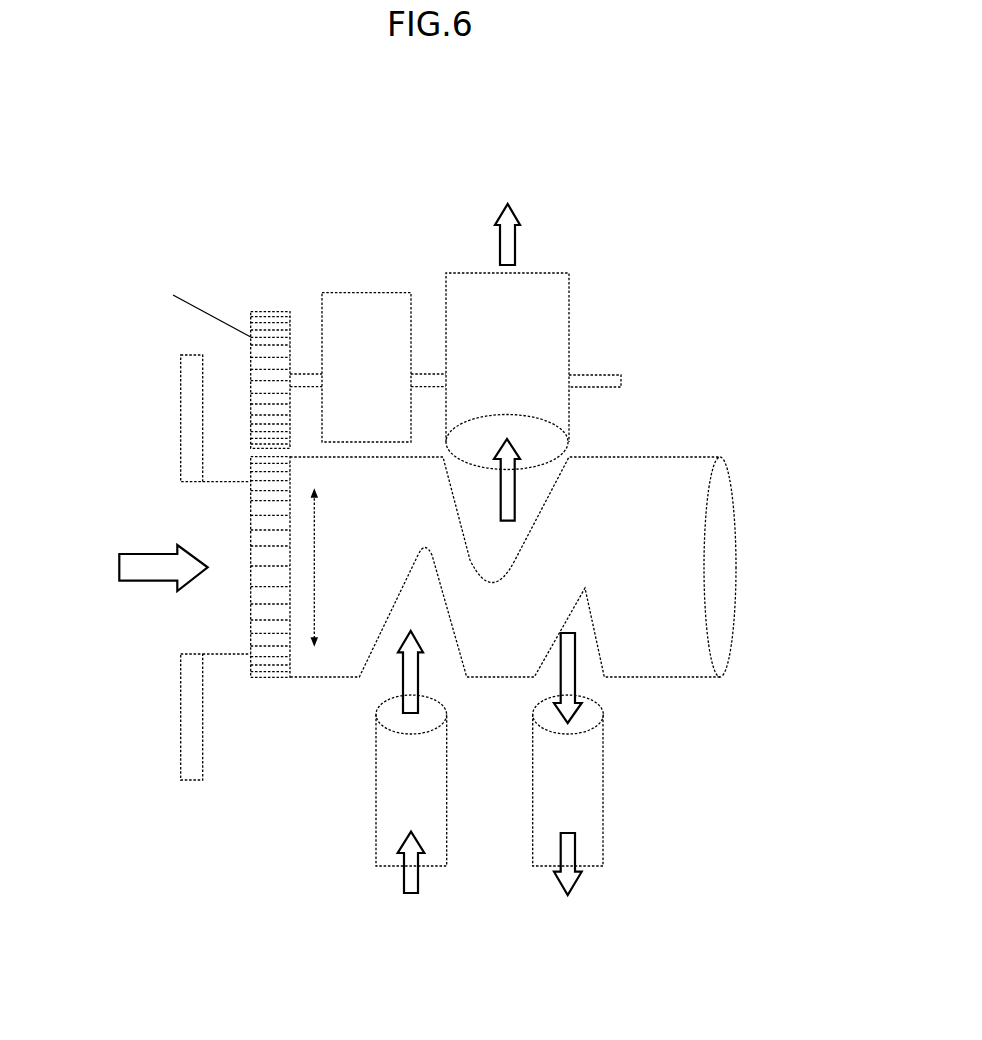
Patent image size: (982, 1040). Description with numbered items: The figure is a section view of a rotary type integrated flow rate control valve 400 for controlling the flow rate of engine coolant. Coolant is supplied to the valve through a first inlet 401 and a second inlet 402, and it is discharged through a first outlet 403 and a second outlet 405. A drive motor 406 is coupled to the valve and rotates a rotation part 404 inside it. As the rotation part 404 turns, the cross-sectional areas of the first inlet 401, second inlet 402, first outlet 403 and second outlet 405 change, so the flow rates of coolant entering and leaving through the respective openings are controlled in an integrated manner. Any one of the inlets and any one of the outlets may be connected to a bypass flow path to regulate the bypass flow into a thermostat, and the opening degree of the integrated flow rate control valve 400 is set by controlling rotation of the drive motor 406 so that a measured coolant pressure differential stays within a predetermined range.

The integrated flow rate control valve 400 is at (680, 338).
The first inlet 401 is at (205, 613).
The second inlet 402 is at (392, 715).
The first outlet 403 is at (593, 710).
The rotation part 404 is at (687, 478).
The second outlet 405 is at (550, 443).
The drive motor 406 is at (366, 292).